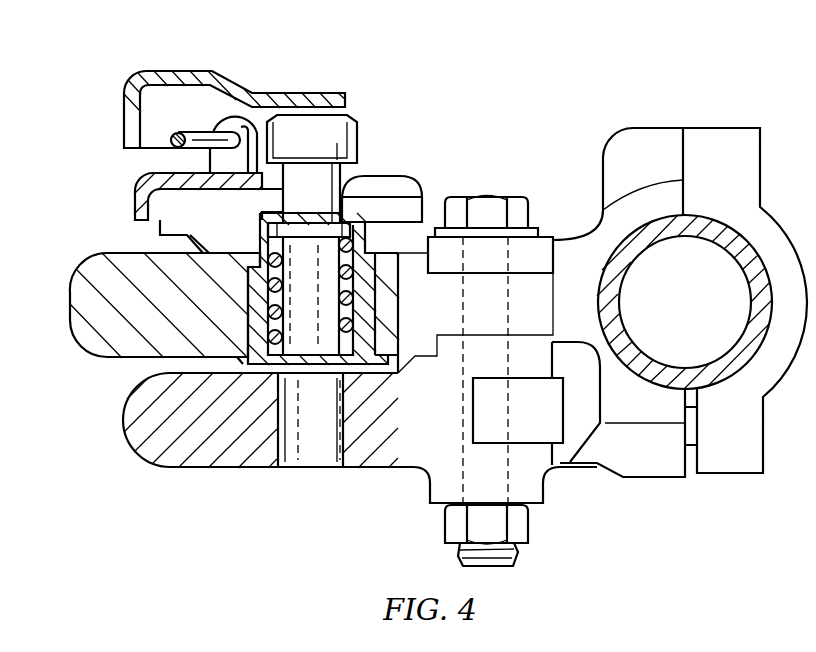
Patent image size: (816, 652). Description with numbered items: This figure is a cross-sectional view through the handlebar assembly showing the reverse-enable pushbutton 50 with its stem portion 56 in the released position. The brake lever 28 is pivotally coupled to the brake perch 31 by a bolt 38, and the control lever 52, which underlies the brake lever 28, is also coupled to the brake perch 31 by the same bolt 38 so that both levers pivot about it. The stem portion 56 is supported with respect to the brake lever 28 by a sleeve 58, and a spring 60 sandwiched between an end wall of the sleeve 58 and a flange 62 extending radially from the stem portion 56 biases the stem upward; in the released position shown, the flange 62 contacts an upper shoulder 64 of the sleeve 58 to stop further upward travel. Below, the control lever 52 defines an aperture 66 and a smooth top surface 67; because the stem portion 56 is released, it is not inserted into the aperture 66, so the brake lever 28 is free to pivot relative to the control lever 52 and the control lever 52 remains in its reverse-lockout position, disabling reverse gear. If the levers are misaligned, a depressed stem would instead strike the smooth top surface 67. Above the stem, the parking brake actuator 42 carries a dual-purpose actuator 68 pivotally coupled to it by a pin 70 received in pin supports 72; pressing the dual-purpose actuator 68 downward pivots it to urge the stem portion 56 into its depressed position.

The brake lever 28 is at (70, 300).
The brake perch 31 is at (556, 243).
The bolt 38 is at (487, 195).
The parking brake actuator 42 is at (135, 202).
The reverse-enable pushbutton 50 is at (365, 139).
The control lever 52 is at (127, 437).
The stem portion 56 is at (340, 128).
The sleeve 58 is at (258, 315).
The spring 60 is at (267, 297).
The flange 62 is at (313, 226).
The upper shoulder 64 is at (383, 178).
The aperture 66 is at (337, 455).
The smooth top surface 67 is at (170, 373).
The dual-purpose actuator 68 is at (163, 70).
The pin 70 is at (210, 130).
The pin supports 72 is at (217, 120).